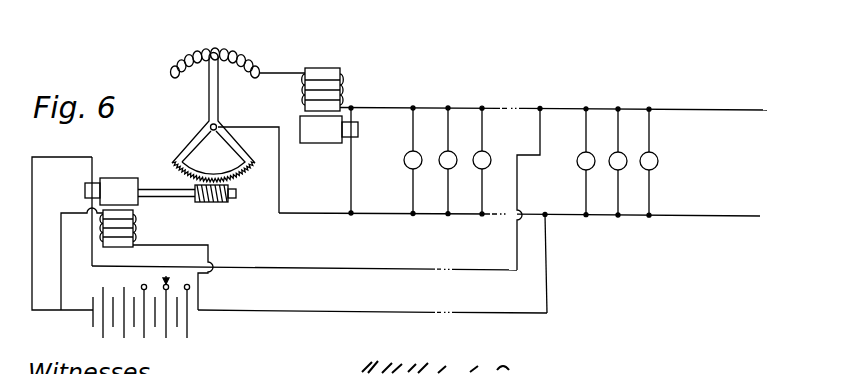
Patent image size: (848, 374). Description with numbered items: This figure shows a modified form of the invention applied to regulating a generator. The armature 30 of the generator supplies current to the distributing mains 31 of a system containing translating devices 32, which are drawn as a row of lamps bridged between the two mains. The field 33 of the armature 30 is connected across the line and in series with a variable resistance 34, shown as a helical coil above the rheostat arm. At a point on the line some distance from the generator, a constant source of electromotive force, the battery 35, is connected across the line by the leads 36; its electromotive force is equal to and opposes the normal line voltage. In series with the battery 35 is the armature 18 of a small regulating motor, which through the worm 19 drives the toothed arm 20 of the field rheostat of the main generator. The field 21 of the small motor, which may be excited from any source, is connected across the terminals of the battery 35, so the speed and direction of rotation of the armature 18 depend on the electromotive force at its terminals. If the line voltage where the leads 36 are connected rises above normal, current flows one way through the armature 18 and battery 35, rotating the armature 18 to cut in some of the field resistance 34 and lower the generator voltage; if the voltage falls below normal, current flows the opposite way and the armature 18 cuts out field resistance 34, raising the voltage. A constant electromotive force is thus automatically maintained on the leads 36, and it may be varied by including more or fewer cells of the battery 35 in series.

The armature of the small regulating motor 18 is at (111, 191).
The worm 19 is at (212, 203).
The toothed arm of the field rheostat 20 is at (213, 118).
The field of the small motor 21 is at (137, 259).
The armature of the generator 30 is at (329, 160).
The distributing main 31 is at (470, 102).
The translating devices 32 is at (483, 167).
The field of the armature 33 is at (340, 82).
The variable resistance 34 is at (247, 58).
The battery 35 is at (111, 257).
The lead 36 is at (314, 262).